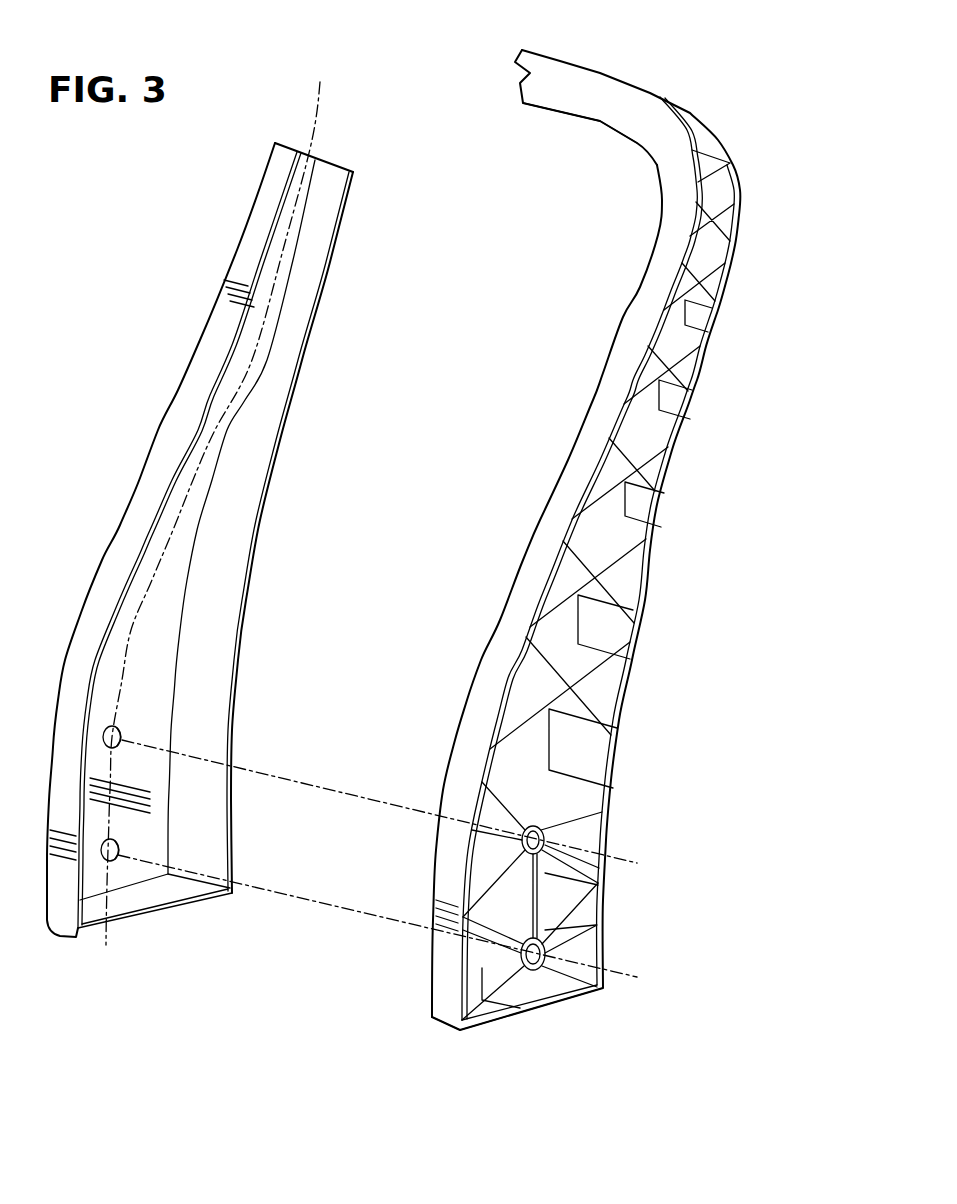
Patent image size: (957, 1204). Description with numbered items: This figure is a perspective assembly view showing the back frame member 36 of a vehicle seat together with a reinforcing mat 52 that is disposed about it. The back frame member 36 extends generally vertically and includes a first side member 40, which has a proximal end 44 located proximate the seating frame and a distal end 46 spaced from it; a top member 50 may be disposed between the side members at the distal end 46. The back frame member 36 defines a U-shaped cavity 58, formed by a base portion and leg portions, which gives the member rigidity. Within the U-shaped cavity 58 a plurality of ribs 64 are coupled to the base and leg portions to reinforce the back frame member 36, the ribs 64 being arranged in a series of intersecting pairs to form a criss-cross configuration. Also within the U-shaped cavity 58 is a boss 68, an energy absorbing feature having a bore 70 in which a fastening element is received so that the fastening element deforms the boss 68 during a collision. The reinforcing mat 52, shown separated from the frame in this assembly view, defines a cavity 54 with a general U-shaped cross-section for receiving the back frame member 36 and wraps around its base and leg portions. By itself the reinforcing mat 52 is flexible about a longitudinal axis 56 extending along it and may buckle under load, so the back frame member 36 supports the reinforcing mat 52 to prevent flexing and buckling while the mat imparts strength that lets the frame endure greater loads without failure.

The back frame member 36 is at (593, 524).
The first side member 40 is at (593, 524).
The proximal end 44 is at (647, 968).
The distal end 46 is at (744, 182).
The top member 50 is at (567, 80).
The reinforcing mat 52 is at (213, 510).
The cavity 54 is at (197, 590).
The longitudinal axis 56 is at (325, 110).
The U-shaped cavity 58 is at (561, 611).
The ribs 64 is at (650, 452).
The boss 68 is at (492, 835).
The bore 70 is at (538, 838).